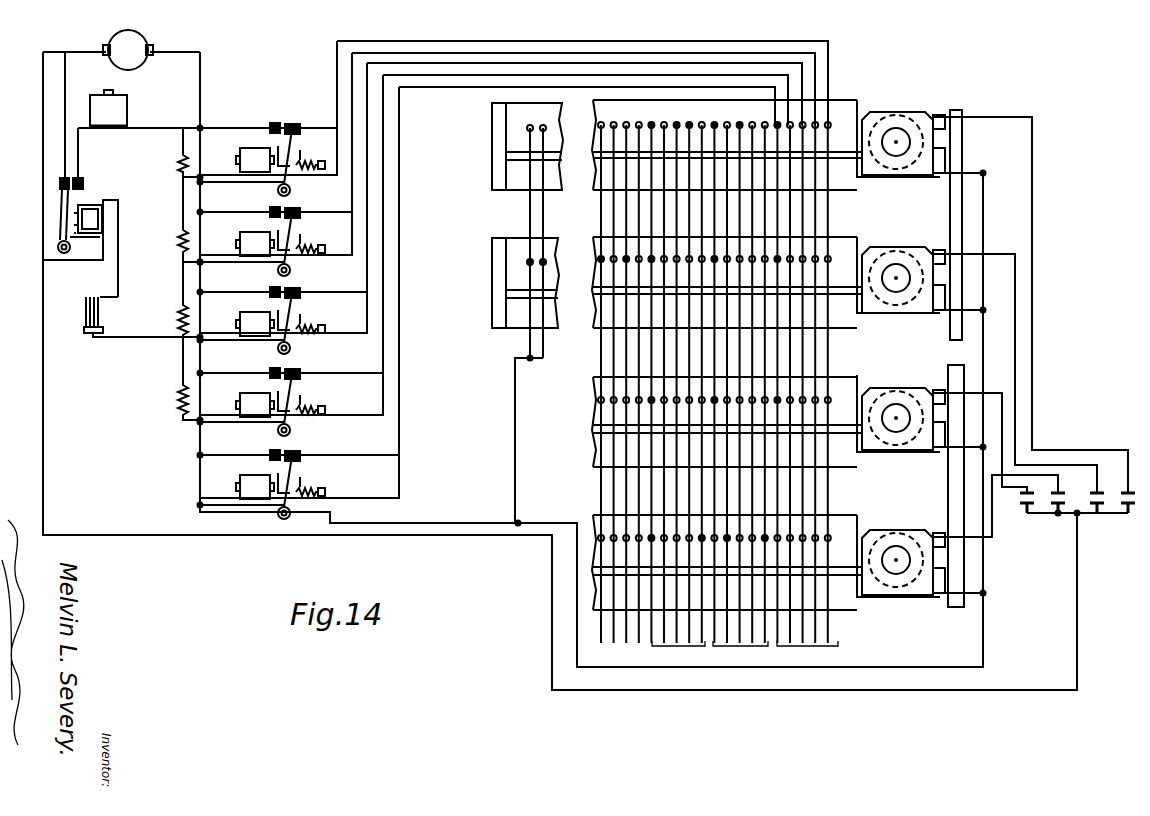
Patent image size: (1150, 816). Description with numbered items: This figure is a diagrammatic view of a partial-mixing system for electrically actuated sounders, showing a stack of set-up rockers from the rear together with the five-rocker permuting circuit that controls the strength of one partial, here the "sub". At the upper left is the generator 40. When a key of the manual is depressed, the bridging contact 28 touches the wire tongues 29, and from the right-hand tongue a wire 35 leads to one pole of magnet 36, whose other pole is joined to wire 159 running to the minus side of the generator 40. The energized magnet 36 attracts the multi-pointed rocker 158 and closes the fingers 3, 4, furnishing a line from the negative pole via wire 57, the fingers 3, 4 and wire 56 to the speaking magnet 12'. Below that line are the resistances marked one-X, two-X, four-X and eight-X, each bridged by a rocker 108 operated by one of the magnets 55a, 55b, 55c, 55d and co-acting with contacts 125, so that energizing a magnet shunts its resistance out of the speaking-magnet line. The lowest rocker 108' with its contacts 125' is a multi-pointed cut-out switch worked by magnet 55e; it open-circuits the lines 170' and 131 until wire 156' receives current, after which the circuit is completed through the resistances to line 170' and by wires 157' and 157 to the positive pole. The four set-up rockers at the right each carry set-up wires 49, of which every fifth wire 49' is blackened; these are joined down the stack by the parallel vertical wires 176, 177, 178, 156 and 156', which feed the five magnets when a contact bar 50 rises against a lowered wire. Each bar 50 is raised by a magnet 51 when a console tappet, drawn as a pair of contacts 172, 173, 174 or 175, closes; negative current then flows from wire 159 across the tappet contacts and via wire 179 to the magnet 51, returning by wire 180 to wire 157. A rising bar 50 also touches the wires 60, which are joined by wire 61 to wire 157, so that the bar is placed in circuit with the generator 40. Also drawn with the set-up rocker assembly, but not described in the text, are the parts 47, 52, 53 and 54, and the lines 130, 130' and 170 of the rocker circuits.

The finger 3 is at (58, 183).
The finger 4 is at (82, 178).
The speaking magnet 12' is at (139, 134).
The bridging contact 28 is at (104, 329).
The wire tongues 29 is at (84, 318).
The wire 35 is at (108, 222).
The magnet 36 is at (88, 203).
The generator 40 is at (142, 58).
The bar 47 is at (956, 192).
The set-up wire 49 is at (715, 375).
The set-up wire 49' is at (709, 320).
The contact bar 50 is at (506, 290).
The magnet 51 is at (890, 114).
The motor housing 52 is at (910, 112).
The frame 53 is at (858, 104).
The band 54 is at (590, 162).
The magnet 55a is at (240, 152).
The magnet 55b is at (243, 232).
The magnet 55c is at (243, 312).
The magnet 55d is at (243, 393).
The magnet 55e is at (258, 499).
The wire 56 is at (65, 138).
The wire 57 is at (65, 78).
The wires 60 is at (533, 128).
The wire 61 is at (515, 405).
The rocker 108 is at (324, 265).
The rocker 108' is at (324, 476).
The contacts 125 is at (271, 264).
The contacts 125' is at (273, 473).
The wire 130 is at (218, 245).
The wire 130' is at (220, 319).
The line 131 is at (183, 268).
The wire 156 is at (411, 290).
The wire 156' is at (421, 447).
The wire 157 is at (595, 359).
The wire 157' is at (355, 511).
The multi-pointed rocker 158 is at (60, 212).
The wire 159 is at (43, 290).
The wire 170 is at (226, 255).
The line 170' is at (253, 436).
The tappet contacts 172 is at (1130, 513).
The tappet contacts 173 is at (1097, 513).
The tappet contacts 174 is at (1062, 488).
The tappet contacts 175 is at (1030, 488).
The wire 176 is at (337, 41).
The wire 177 is at (352, 111).
The wire 178 is at (383, 195).
The wire 179 is at (1032, 240).
The wire 180 is at (956, 170).